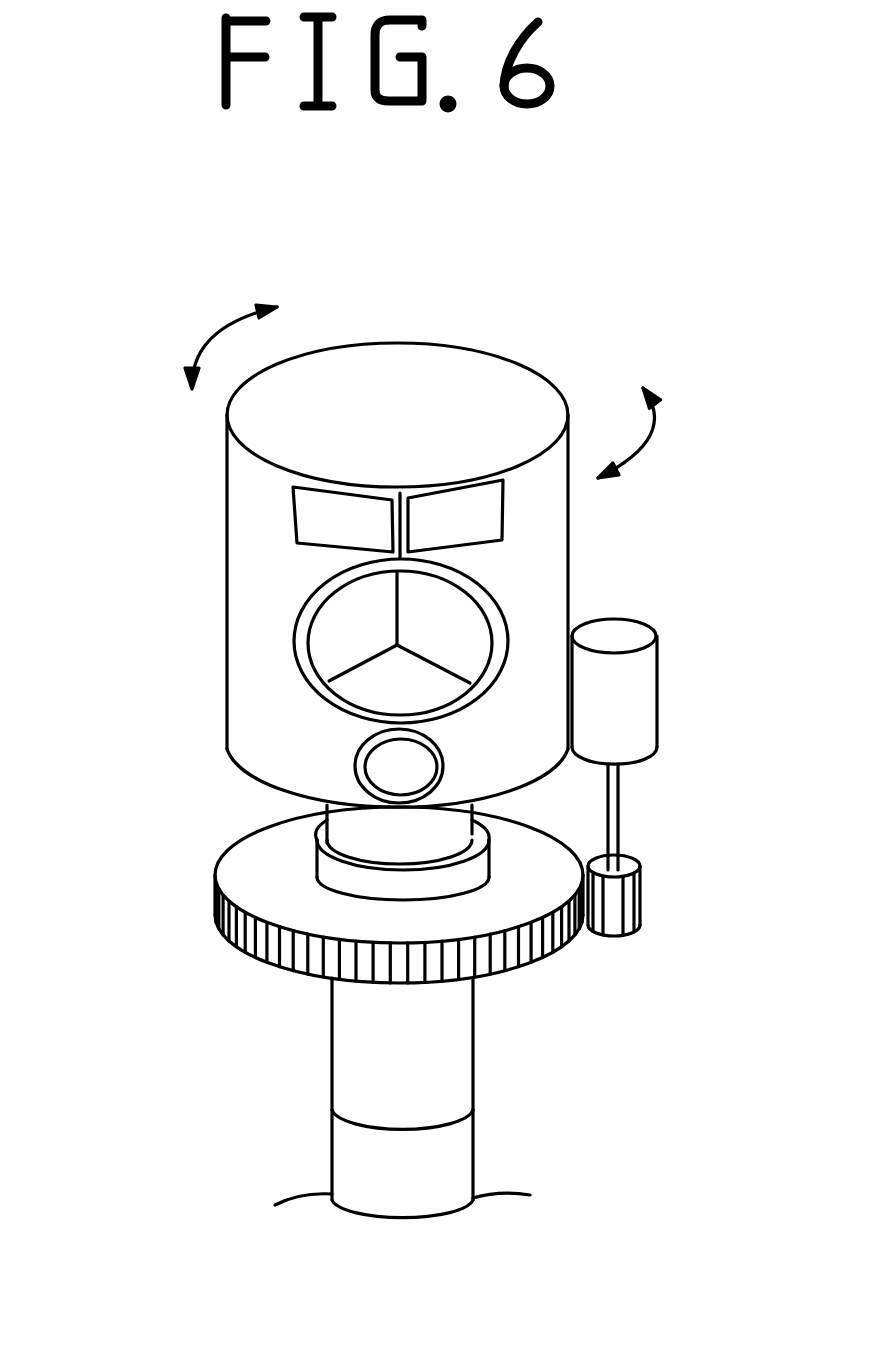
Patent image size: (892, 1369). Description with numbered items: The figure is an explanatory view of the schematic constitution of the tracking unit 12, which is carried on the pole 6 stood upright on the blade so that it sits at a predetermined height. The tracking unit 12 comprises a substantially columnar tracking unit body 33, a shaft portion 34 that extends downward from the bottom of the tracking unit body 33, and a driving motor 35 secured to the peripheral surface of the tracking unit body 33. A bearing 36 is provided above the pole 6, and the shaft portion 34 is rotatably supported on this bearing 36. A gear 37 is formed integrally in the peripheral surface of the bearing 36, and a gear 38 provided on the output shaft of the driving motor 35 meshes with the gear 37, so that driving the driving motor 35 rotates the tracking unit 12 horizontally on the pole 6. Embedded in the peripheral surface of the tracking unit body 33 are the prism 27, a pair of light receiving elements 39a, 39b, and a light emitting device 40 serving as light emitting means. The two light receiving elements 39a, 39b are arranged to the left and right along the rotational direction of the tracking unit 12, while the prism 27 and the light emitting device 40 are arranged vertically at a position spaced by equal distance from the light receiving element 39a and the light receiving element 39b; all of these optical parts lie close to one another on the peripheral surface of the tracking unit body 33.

The tracking unit 12 is at (449, 322).
The tracking unit body 33 is at (263, 557).
The light receiving element 39a is at (340, 523).
The light receiving element 39b is at (477, 512).
The prism 27 is at (460, 622).
The light emitting device 40 is at (385, 762).
The driving motor 35 is at (617, 715).
The gear 38 is at (630, 902).
The shaft portion 34 is at (360, 832).
The gear 37 is at (542, 942).
The bearing 36 is at (433, 1055).
The pole 6 is at (360, 1157).